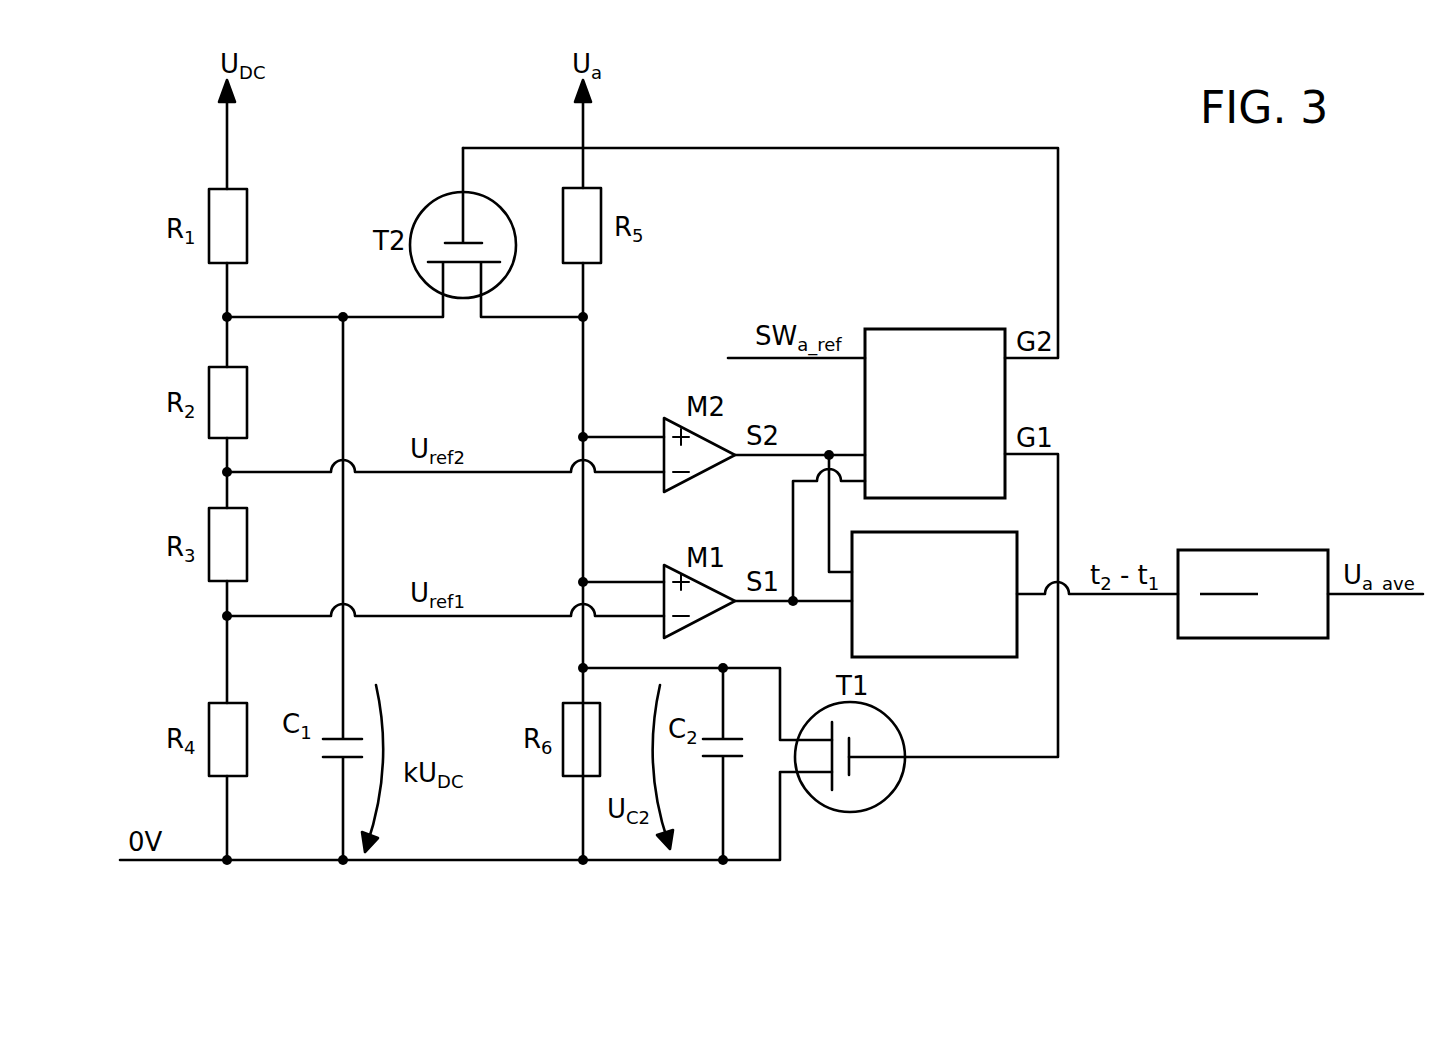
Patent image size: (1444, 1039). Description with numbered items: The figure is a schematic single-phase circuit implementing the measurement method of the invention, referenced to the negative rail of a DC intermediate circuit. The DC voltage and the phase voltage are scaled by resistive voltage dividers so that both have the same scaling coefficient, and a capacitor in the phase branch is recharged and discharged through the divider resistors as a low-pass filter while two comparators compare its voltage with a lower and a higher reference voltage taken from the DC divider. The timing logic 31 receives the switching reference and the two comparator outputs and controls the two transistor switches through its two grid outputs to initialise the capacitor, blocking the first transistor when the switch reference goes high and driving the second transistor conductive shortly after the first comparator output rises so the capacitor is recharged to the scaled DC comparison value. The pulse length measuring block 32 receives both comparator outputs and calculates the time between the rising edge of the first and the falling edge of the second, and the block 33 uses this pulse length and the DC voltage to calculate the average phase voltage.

The timing logic 31 is at (933, 328).
The pulse length measuring block 32 is at (965, 658).
The block that calculates average phase voltage 33 is at (1255, 640).